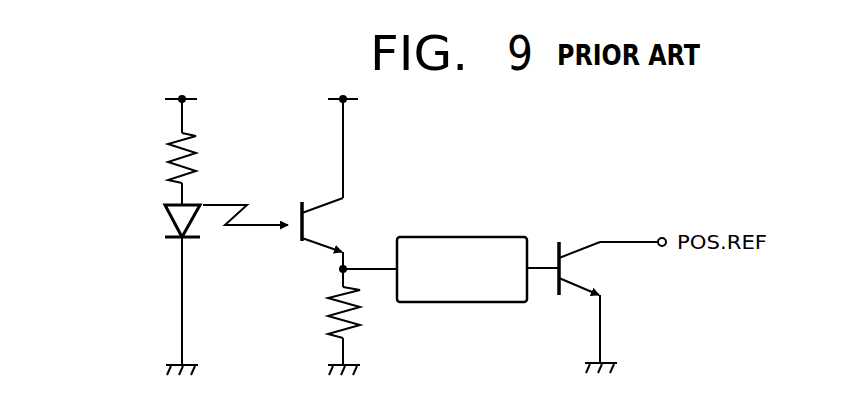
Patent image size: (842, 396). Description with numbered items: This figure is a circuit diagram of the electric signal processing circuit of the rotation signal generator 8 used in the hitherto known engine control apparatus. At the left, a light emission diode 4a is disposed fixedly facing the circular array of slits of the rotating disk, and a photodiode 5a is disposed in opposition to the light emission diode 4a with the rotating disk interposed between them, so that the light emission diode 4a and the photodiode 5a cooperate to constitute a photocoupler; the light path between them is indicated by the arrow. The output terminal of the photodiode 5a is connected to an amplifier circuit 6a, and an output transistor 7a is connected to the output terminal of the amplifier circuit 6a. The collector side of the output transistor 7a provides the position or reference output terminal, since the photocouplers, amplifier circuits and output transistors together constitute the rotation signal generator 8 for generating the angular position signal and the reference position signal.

The light emission diode 4a is at (161, 215).
The photodiode 5a is at (328, 198).
The amplifier circuit 6a is at (475, 237).
The output transistor 7a is at (596, 242).
The rotation signal generator 8 is at (429, 203).